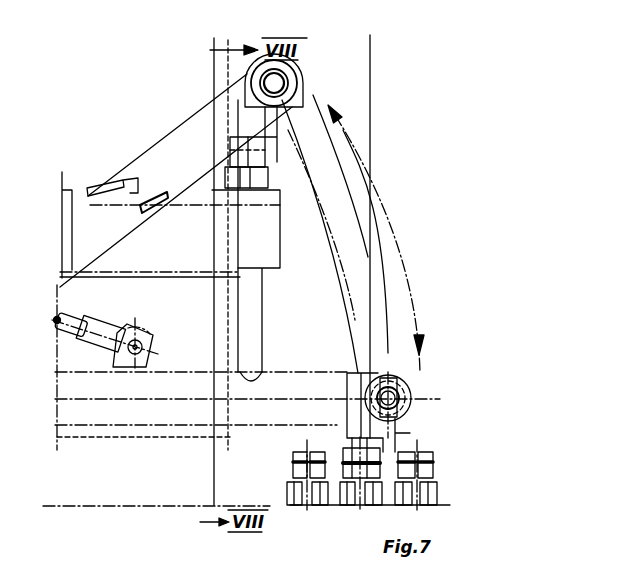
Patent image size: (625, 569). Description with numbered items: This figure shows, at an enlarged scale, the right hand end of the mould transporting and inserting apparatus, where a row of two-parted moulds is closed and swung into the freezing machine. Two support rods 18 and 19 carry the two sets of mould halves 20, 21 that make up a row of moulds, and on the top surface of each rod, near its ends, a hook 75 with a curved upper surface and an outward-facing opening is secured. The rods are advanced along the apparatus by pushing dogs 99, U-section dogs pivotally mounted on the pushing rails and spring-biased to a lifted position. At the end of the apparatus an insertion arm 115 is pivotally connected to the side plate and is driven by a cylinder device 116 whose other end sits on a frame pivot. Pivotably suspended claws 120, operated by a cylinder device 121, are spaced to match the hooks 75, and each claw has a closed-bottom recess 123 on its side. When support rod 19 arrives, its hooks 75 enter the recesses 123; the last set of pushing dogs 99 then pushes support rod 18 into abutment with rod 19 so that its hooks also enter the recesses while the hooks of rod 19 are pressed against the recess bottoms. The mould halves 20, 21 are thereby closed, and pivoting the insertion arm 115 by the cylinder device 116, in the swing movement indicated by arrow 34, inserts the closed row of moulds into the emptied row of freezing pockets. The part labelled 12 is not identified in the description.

The base line 12 is at (137, 513).
The support rod 18 is at (222, 178).
The support rod 19 is at (265, 190).
The mould halves 20 is at (230, 302).
The mould halves 21 is at (257, 307).
The arrow 34 is at (396, 232).
The hook 75 is at (254, 138).
The pushing dogs 99 is at (105, 163).
The insertion arm 115 is at (185, 138).
The cylinder device 116 is at (107, 328).
The claw 120 is at (268, 152).
The cylinder device 121 is at (292, 73).
The recess 123 is at (357, 447).